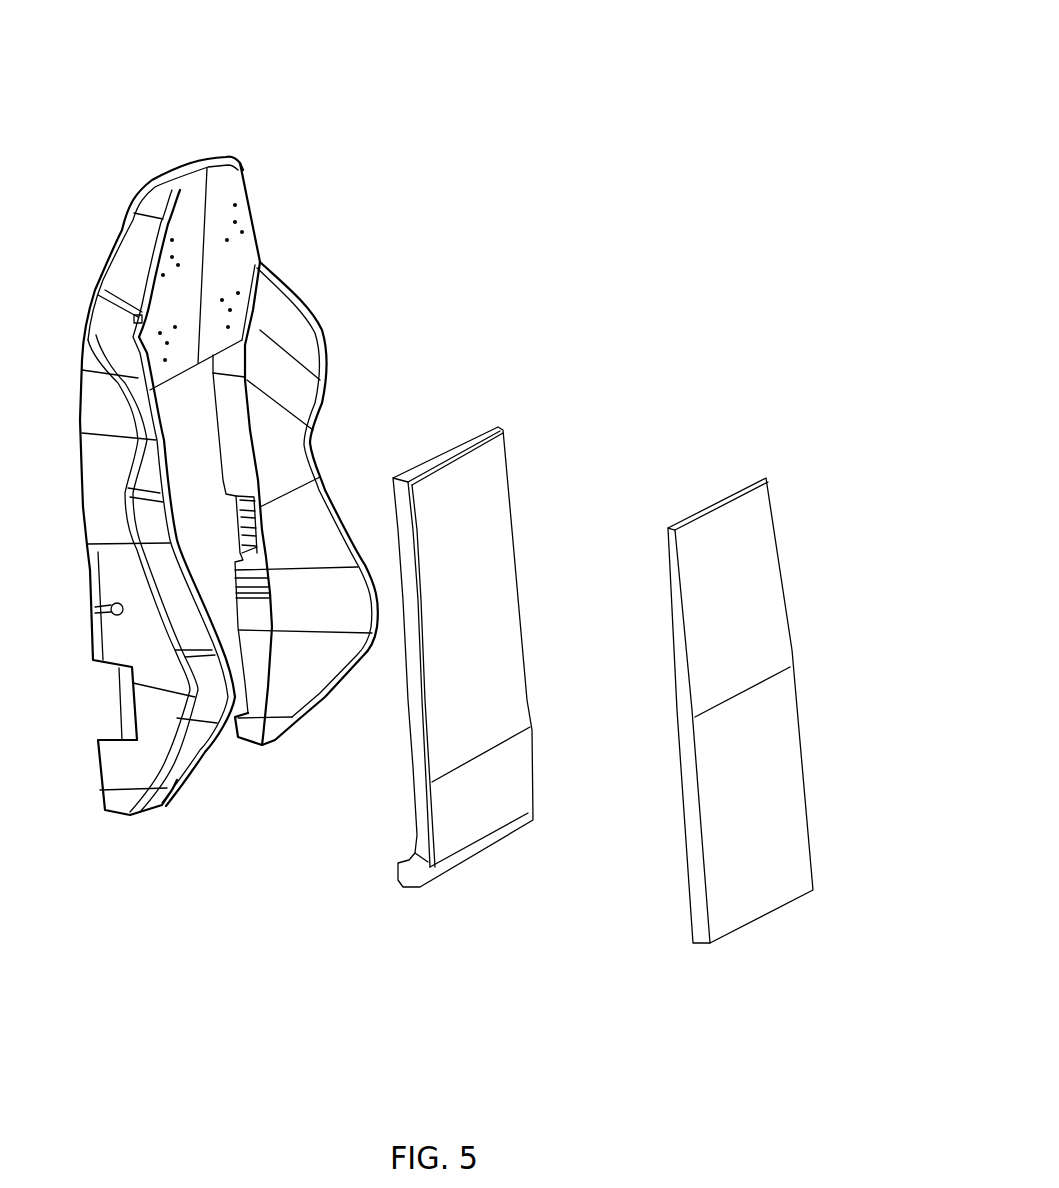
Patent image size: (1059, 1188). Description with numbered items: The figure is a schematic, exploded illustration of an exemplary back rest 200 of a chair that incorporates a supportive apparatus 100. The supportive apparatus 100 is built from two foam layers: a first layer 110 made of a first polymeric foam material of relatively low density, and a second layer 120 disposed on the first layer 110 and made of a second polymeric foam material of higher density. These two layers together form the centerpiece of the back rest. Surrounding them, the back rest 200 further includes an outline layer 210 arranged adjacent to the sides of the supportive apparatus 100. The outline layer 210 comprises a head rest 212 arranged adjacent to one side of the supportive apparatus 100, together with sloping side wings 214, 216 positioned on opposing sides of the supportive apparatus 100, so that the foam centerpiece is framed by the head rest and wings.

The back rest 200 is at (811, 43).
The outline layer 210 is at (168, 133).
The head rest 212 is at (230, 190).
The sloping side wing 214 is at (293, 320).
The sloping side wing 216 is at (145, 757).
The supportive apparatus 100 is at (763, 400).
The second layer 120 is at (490, 593).
The first layer 110 is at (747, 610).